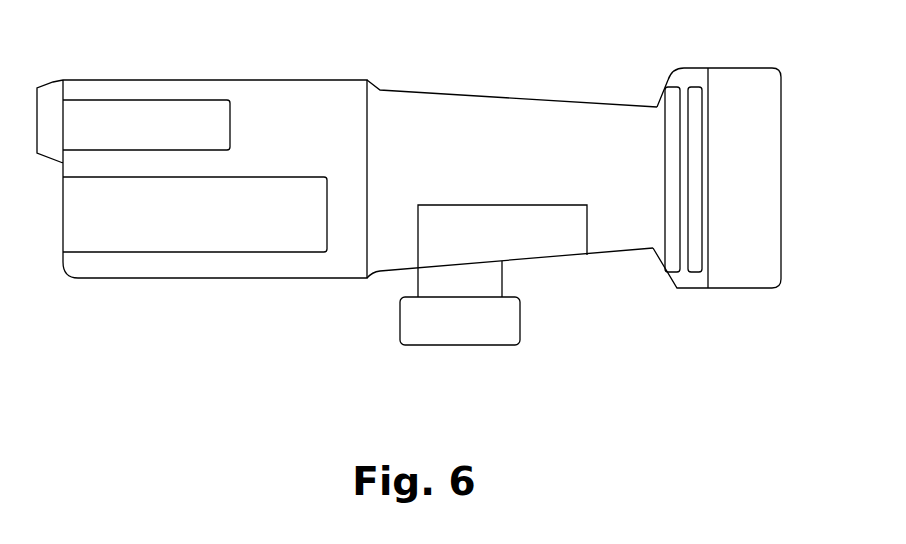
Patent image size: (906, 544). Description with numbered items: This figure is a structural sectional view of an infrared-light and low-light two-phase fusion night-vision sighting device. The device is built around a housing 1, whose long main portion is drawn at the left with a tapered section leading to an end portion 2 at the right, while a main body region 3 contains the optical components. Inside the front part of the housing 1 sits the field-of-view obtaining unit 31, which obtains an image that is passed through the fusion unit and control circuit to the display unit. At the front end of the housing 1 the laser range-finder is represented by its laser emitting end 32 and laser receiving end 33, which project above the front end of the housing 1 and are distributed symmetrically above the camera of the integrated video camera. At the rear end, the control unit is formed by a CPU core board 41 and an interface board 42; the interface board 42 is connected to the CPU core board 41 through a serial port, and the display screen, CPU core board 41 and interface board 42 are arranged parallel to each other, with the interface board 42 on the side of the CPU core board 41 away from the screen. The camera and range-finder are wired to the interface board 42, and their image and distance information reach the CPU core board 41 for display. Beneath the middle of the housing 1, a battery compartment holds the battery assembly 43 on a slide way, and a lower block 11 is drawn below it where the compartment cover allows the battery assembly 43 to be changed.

The housing 1 is at (403, 108).
The end cap 2 is at (720, 83).
The main body 3 is at (268, 100).
The mounting block 11 is at (422, 333).
The field-of-view obtaining unit 31 is at (163, 242).
The laser emitting end 32 is at (146, 90).
The laser receiving end 33 is at (100, 118).
The CPU core board 41 is at (710, 288).
The interface board 42 is at (668, 270).
The battery assembly 43 is at (542, 248).